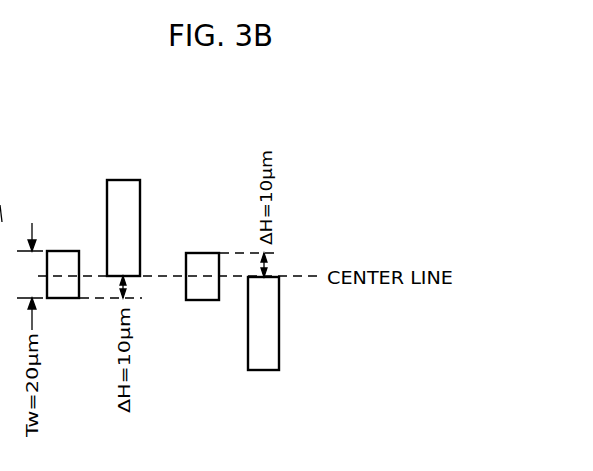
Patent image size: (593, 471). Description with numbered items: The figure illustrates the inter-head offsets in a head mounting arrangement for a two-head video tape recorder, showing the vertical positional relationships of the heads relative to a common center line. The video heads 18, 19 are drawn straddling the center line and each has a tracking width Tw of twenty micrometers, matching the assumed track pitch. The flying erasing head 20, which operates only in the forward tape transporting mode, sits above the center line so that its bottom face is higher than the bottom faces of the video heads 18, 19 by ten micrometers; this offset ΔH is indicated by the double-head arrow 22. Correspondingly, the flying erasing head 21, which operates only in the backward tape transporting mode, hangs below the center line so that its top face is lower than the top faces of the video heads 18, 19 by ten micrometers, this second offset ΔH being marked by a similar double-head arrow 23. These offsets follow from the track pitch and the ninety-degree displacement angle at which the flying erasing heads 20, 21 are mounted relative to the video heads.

The video head 18 is at (63, 251).
The video head 19 is at (202, 300).
The flying erasing head 20 is at (128, 180).
The flying erasing head 21 is at (262, 370).
The double-head arrow 22 is at (128, 292).
The height offset 23 is at (267, 267).